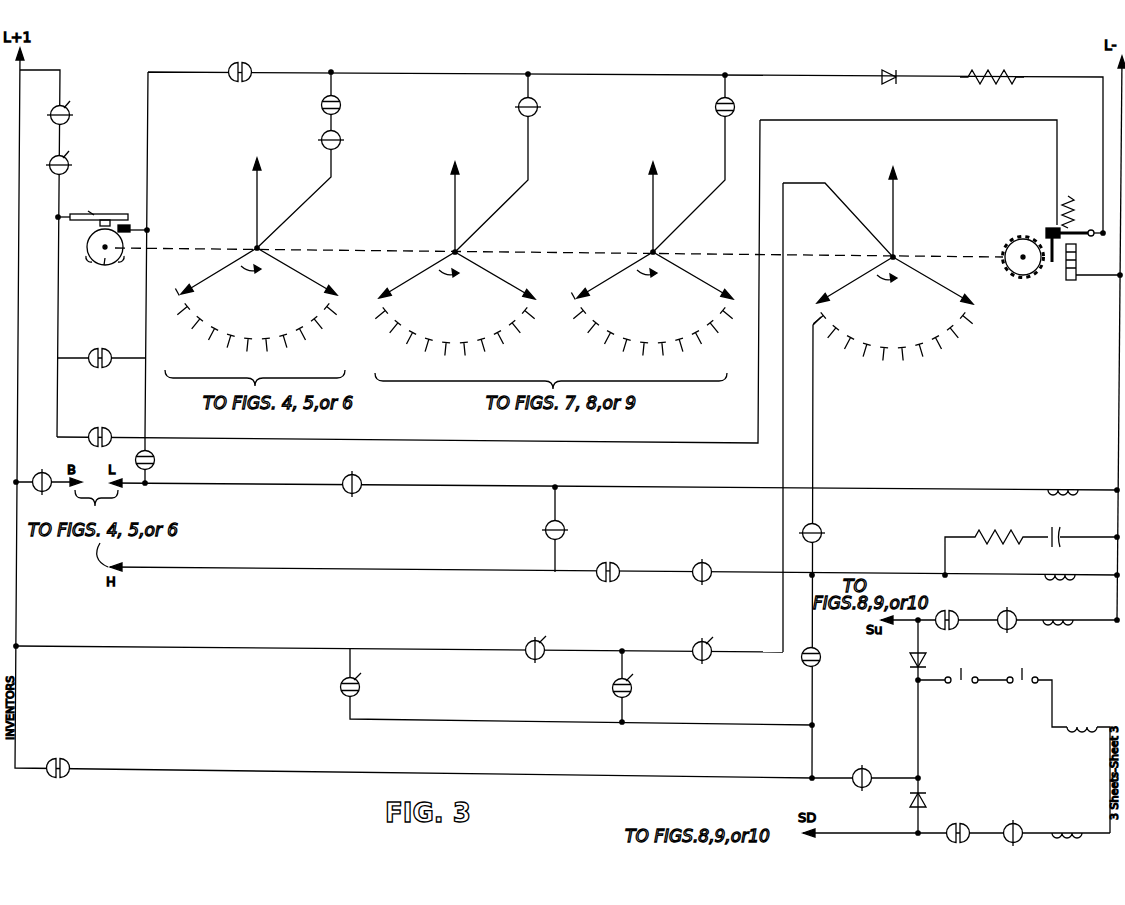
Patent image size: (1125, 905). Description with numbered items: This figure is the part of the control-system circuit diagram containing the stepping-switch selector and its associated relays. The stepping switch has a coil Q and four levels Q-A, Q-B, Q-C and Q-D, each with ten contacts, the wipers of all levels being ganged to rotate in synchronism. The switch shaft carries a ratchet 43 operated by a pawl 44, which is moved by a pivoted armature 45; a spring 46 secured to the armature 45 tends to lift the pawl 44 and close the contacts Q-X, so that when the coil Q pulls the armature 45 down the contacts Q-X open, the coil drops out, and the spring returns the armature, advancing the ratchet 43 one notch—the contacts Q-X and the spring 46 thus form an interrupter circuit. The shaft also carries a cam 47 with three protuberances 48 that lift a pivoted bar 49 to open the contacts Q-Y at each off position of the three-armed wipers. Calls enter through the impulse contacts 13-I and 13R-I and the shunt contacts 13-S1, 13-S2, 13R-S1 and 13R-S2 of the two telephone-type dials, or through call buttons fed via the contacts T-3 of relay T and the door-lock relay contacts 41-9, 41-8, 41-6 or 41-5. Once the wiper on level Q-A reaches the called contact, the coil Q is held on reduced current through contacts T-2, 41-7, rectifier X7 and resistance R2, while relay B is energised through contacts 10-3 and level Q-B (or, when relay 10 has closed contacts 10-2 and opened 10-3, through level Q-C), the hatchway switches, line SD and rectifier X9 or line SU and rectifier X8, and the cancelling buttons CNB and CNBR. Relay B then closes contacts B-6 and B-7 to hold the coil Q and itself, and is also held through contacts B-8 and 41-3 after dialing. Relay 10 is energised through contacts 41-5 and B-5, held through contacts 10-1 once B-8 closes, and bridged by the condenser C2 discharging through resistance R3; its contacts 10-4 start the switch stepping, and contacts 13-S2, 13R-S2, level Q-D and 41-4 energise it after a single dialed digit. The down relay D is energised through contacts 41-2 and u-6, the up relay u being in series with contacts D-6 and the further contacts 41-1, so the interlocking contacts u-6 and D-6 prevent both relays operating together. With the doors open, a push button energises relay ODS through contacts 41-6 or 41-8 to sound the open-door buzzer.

The ratchet 43 is at (1020, 276).
The pawl 44 is at (1052, 264).
The pivoted armature 45 is at (1075, 231).
The spring 46 is at (1071, 203).
The cam 47 is at (104, 265).
The protuberances 48 is at (86, 258).
The pivoted bar 49 is at (85, 206).
The interrupter contacts Q-X is at (1063, 237).
The off-position contacts Q-Y is at (136, 221).
The stepping switch coil Q is at (1094, 262).
The first level of stepping switch Q-A is at (252, 265).
The second level of stepping switch Q-B is at (462, 267).
The third level of stepping switch Q-C is at (647, 267).
The fourth level of stepping switch Q-D is at (893, 264).
The impulse contacts of first dial 13-I is at (74, 113).
The impulse contacts of second dial 13R-I is at (78, 163).
The contacts of relay B B-6 is at (239, 64).
The contacts of relay B B-7 is at (102, 349).
The contacts of relay B B-5 is at (701, 565).
The contacts of relay B B-8 is at (57, 759).
The contacts of door-lock relay 41-7 is at (351, 105).
The contacts of relay T T-2 is at (344, 140).
The contacts of relay T T-3 is at (37, 490).
The contacts of relay 10 10-3 is at (546, 107).
The contacts of relay 10 10-2 is at (705, 107).
The contacts of relay 10 10-4 is at (101, 429).
The contacts of relay 10 10-1 is at (829, 657).
The relay 10 is at (1060, 566).
The contacts of door-lock relay 41-9 is at (164, 460).
The contacts of door-lock relay 41-8 is at (355, 493).
The contacts of door-lock relay 41-6 is at (572, 530).
The contacts of door-lock relay 41-5 is at (611, 563).
The contacts of door-lock relay 41-4 is at (828, 533).
The contacts of door-lock relay 41-3 is at (863, 769).
The contacts of door-lock relay 41-2 is at (959, 824).
The contact 41-1 is at (948, 611).
The rectifier X7 is at (887, 66).
The rectifier X8 is at (928, 659).
The rectifier X9 is at (928, 797).
The resistance R2 is at (992, 66).
The resistance R3 is at (995, 544).
The condenser C2 is at (1085, 531).
The open door relay ODS is at (1063, 481).
The shunt contacts of first dial 13-S2 is at (550, 642).
The shunt contacts of second dial 13R-S2 is at (717, 642).
The shunt contacts of first dial 13-S1 is at (372, 685).
The shunt contacts of second dial 13R-S1 is at (649, 686).
The contacts of down relay D-6 is at (1006, 612).
The up relay u is at (1058, 609).
The contacts of up relay u-6 is at (1011, 825).
The cancelling button CNB is at (962, 684).
The cancelling button CNBR is at (1035, 697).
The relay B is at (1088, 767).
The down relay D is at (1067, 821).